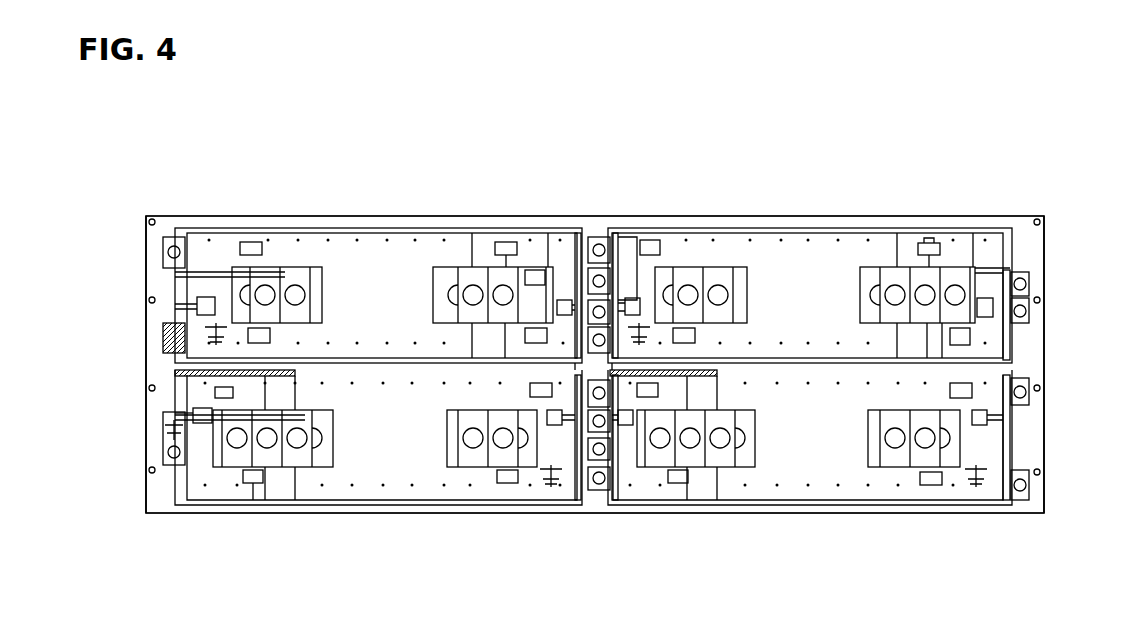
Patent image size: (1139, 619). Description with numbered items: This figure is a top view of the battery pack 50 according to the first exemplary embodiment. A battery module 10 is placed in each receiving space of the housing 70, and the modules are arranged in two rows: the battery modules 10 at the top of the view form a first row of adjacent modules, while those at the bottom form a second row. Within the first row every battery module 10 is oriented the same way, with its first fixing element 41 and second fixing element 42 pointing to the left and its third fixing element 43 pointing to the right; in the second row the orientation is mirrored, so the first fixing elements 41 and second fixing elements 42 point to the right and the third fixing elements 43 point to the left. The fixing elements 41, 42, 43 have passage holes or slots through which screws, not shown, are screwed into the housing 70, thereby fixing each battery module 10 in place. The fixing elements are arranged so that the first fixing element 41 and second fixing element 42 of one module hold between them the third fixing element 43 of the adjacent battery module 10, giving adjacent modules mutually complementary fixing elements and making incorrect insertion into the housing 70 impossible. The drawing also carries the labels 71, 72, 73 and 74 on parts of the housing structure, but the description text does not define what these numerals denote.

The battery pack 50 is at (290, 190).
The battery module 10 is at (365, 250).
The first fixing element 41 is at (146, 235).
The second fixing element 42 is at (158, 350).
The third fixing element 43 is at (162, 438).
The housing 70 is at (1022, 343).
The side wall 71 is at (158, 288).
The end wall 72 is at (1025, 245).
The partition 73 is at (595, 232).
The cover plate 74 is at (915, 228).